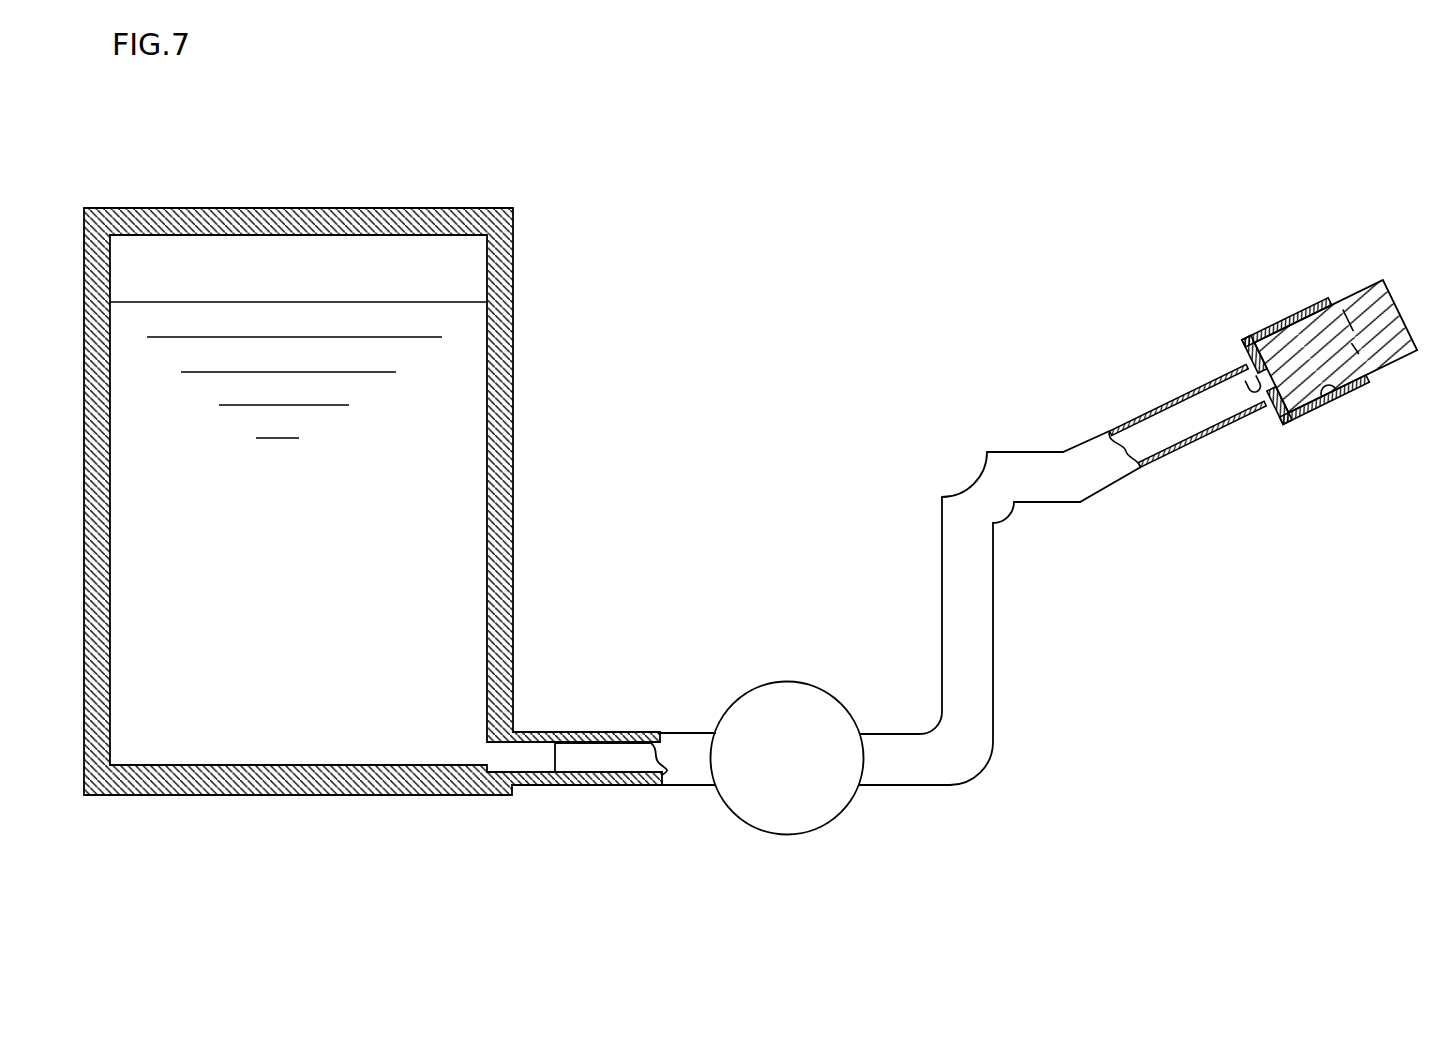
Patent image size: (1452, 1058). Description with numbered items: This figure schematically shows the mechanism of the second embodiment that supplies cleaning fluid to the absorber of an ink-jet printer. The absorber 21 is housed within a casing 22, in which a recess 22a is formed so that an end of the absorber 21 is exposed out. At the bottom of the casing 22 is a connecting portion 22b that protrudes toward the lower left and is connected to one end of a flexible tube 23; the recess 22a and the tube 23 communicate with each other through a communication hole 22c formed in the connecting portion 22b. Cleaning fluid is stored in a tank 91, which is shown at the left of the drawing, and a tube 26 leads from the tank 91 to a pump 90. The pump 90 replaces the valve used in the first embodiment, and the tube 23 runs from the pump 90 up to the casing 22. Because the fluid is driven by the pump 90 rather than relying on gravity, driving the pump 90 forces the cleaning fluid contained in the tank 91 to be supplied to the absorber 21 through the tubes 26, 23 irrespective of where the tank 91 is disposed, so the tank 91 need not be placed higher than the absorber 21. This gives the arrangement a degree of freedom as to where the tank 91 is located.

The absorber 21 is at (1367, 310).
The casing 22 is at (1307, 300).
The recess 22a is at (1333, 400).
The connecting portion 22b is at (1257, 408).
The communication hole 22c is at (1240, 373).
The flexible tube 23 is at (968, 632).
The tube 26 is at (687, 748).
The pump 90 is at (787, 822).
The tank 91 is at (507, 258).